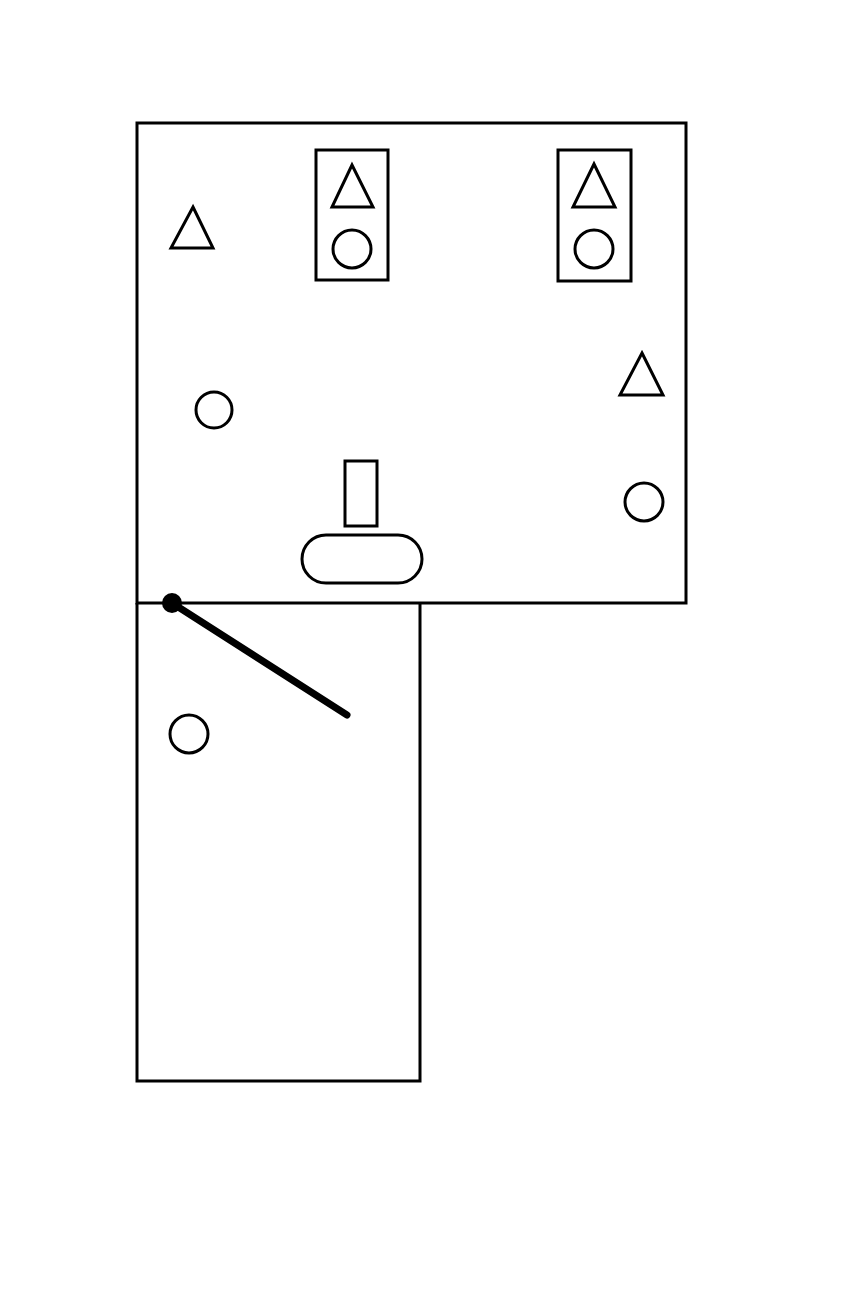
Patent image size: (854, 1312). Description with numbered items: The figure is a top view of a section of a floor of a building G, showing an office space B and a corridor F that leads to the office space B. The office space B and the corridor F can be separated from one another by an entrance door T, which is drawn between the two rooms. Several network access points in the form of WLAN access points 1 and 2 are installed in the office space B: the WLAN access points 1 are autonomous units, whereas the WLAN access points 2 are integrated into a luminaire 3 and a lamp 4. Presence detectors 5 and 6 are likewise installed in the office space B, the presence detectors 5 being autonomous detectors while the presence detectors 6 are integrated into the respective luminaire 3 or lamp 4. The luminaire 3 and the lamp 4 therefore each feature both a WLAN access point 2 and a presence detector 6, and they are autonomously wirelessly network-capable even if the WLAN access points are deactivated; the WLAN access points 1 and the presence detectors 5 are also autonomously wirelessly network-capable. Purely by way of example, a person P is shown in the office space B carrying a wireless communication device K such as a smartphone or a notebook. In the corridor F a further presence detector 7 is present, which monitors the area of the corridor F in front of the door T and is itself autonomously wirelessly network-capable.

The building G is at (100, 89).
The office space B is at (232, 123).
The corridor F is at (137, 870).
The entrance door T is at (222, 641).
The WLAN access point 1 is at (183, 228).
The WLAN access point 2 is at (364, 186).
The luminaire 3 is at (363, 150).
The lamp 4 is at (581, 150).
The presence detector 5 is at (196, 402).
The presence detector 6 is at (370, 245).
The presence detector 7 is at (171, 732).
The wireless communication device K is at (377, 493).
The person P is at (422, 557).